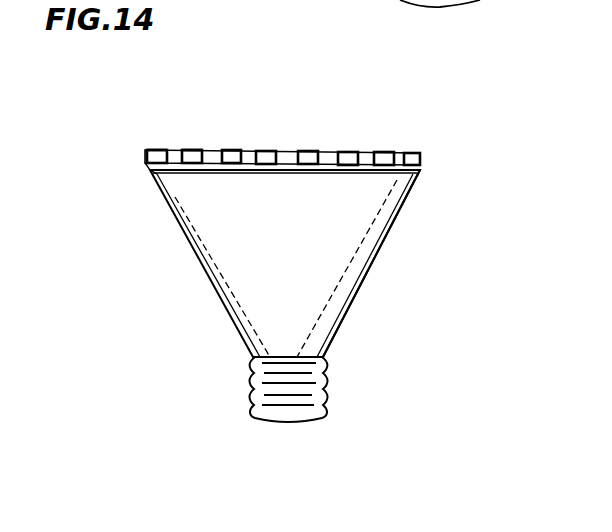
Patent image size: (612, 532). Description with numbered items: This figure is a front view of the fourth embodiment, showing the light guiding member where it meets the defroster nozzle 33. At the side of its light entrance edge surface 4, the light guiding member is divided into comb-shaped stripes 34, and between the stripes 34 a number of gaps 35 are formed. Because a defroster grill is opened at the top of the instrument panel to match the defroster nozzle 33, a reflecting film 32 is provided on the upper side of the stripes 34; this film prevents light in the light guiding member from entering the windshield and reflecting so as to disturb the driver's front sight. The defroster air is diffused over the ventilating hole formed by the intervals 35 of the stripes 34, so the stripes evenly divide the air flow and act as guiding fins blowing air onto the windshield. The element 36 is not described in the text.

The light entrance edge surface 4 is at (383, 166).
The reflecting film 32 is at (310, 157).
The defroster nozzle 33 is at (408, 187).
The stripes 34 is at (422, 153).
The gaps 35 is at (210, 148).
The strip edge 36 is at (160, 170).